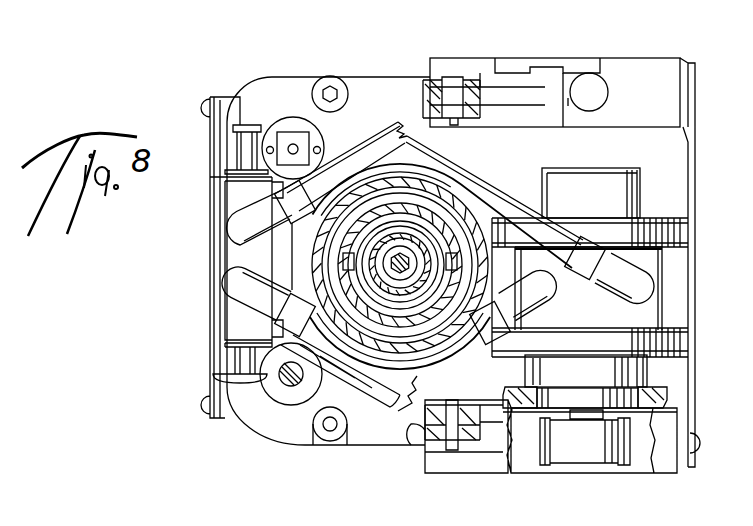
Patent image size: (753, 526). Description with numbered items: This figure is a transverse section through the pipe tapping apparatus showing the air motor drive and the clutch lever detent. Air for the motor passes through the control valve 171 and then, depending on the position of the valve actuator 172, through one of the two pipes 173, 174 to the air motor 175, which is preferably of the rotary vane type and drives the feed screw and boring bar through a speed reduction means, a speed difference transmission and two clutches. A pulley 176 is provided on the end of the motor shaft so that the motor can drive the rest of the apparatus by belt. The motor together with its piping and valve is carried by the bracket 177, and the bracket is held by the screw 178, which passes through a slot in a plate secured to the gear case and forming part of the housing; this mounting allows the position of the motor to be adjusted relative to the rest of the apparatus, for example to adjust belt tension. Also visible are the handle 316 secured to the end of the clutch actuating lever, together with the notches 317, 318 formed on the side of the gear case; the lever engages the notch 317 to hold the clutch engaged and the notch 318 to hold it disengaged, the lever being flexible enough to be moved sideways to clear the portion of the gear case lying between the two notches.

The control valve 171 is at (225, 200).
The valve actuator 172 is at (237, 362).
The pipe 173 is at (427, 158).
The pipe 174 is at (422, 375).
The air motor 175 is at (596, 315).
The pulley 176 is at (578, 447).
The bracket 177 is at (400, 411).
The screw 178 is at (452, 453).
The handle 316 is at (598, 89).
The notch 317 is at (568, 104).
The notch 318 is at (505, 70).